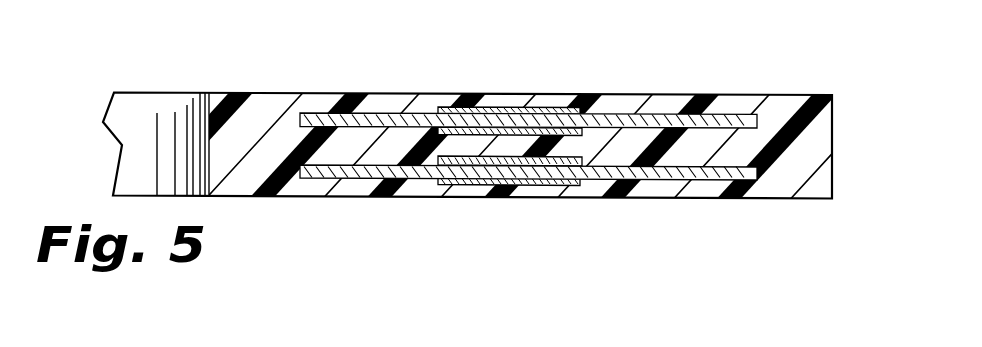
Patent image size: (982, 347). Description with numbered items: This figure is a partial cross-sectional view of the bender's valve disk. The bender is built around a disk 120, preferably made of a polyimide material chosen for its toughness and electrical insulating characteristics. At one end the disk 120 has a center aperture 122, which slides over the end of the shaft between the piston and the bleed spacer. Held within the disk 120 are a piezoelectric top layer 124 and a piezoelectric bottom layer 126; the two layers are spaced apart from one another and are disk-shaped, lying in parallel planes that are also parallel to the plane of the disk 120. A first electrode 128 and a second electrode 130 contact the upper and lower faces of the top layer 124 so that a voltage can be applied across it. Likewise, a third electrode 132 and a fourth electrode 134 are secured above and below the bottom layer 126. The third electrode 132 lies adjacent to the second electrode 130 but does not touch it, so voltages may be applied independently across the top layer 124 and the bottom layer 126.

The disk 120 is at (825, 150).
The center aperture 122 is at (177, 108).
The piezoelectric top layer 124 is at (393, 113).
The piezoelectric bottom layer 126 is at (360, 178).
The first electrode 128 is at (520, 107).
The second electrode 130 is at (588, 129).
The third electrode 132 is at (586, 164).
The fourth electrode 134 is at (440, 183).